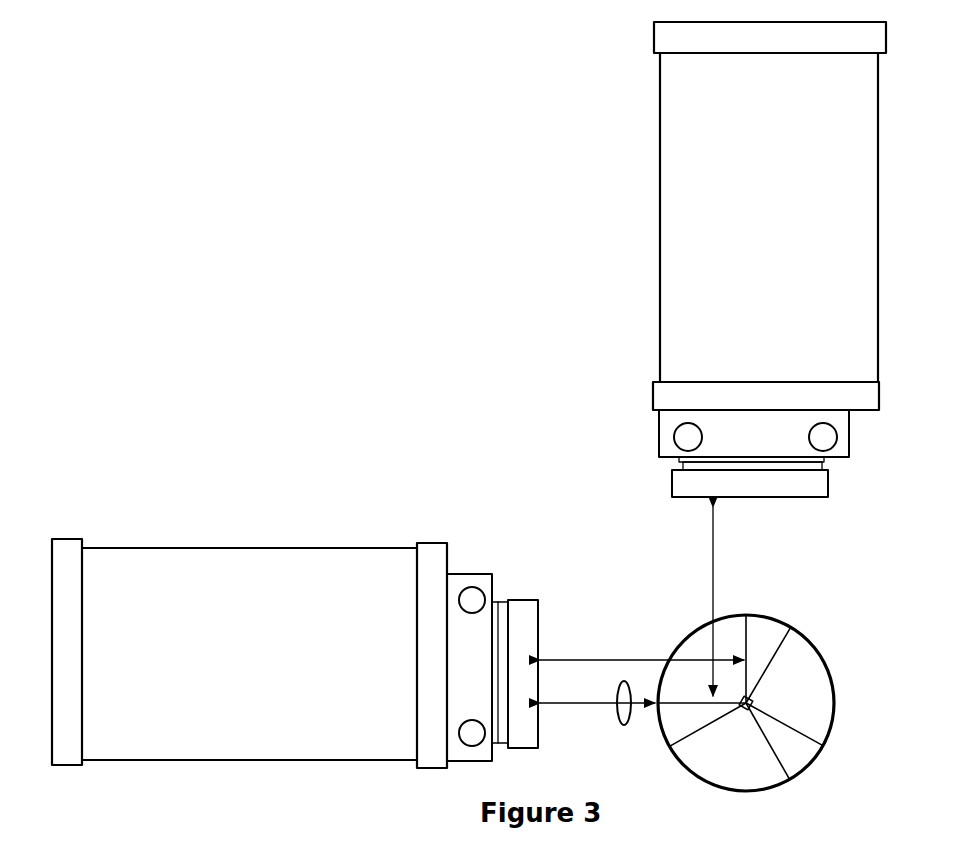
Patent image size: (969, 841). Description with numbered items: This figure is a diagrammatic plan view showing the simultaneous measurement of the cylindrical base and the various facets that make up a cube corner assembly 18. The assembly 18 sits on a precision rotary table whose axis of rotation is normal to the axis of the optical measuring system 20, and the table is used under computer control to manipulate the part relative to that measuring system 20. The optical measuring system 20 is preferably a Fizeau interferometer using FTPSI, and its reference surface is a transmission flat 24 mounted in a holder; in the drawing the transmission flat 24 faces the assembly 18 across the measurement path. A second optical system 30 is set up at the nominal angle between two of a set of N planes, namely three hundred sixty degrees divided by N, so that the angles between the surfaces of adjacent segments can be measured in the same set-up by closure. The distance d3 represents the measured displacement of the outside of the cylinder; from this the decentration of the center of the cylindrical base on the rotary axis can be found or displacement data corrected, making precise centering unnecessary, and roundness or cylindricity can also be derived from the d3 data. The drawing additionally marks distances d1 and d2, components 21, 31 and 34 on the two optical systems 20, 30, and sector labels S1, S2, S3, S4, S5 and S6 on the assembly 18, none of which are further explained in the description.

The assembly 18 is at (779, 703).
The optical measuring system 20 is at (343, 557).
The mounting block 21 is at (473, 578).
The transmission flat 24 is at (525, 603).
The optical system 30 is at (670, 313).
The mounting block 31 is at (667, 438).
The plate 34 is at (682, 484).
The disc sector S1 is at (745, 648).
The disc sector S2 is at (700, 700).
The disc sector S3 is at (701, 743).
The disc sector S4 is at (774, 755).
The disc sector S5 is at (793, 716).
The disc sector S6 is at (785, 637).
The distance d1 is at (642, 642).
The distance d2 is at (696, 601).
The distance d3 is at (597, 708).